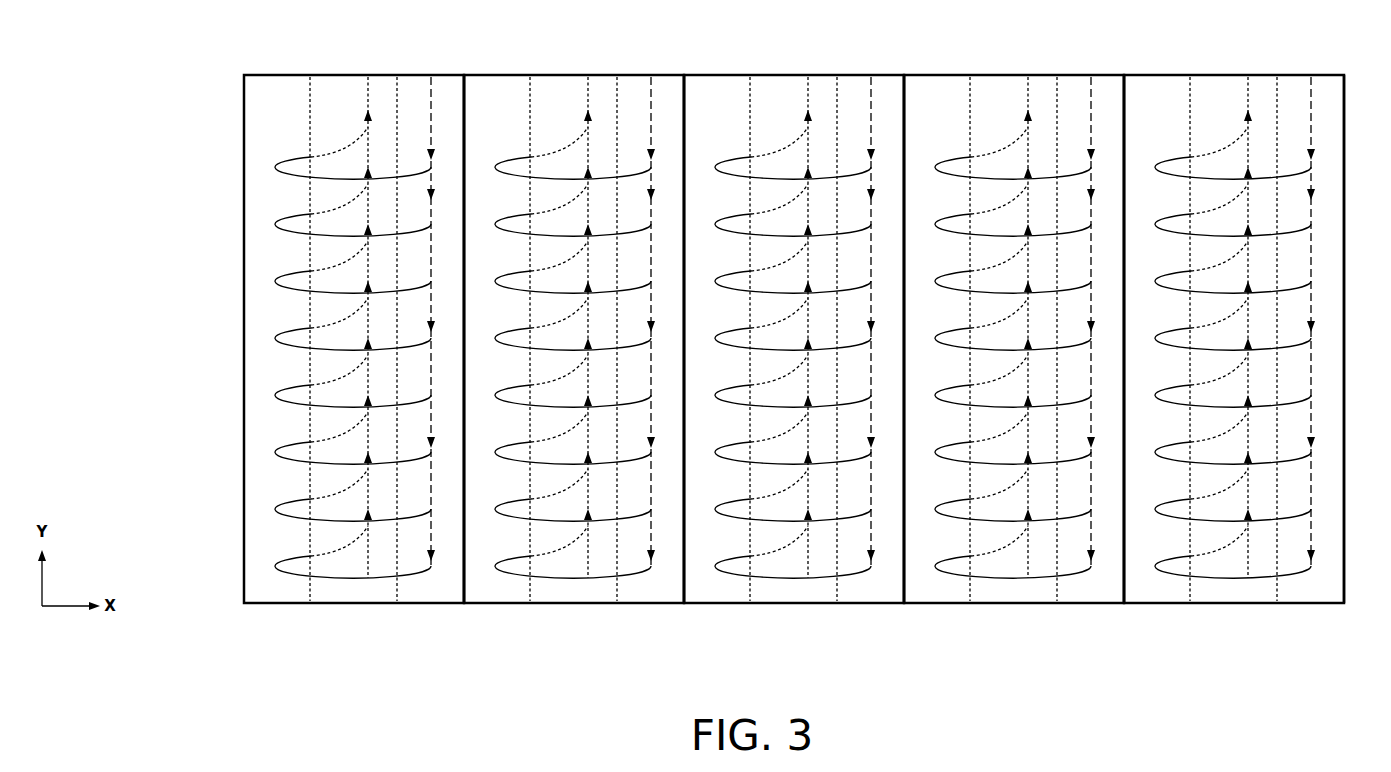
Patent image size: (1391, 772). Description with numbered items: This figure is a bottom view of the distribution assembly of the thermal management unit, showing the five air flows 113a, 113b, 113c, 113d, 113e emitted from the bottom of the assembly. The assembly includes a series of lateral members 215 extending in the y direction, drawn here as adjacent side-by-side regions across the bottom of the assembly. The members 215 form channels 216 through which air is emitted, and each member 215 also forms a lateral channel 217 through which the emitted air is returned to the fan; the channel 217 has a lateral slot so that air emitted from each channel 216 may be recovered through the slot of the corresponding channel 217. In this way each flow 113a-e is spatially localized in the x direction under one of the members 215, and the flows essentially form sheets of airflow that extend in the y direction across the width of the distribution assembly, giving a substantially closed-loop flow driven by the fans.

The flow 113a is at (1262, 580).
The flow 113b is at (1042, 580).
The flow 113c is at (822, 580).
The flow 113d is at (602, 580).
The flow 113e is at (382, 580).
The lateral member 215 is at (464, 88).
The channel 216 is at (412, 92).
The lateral channel 217 is at (337, 92).